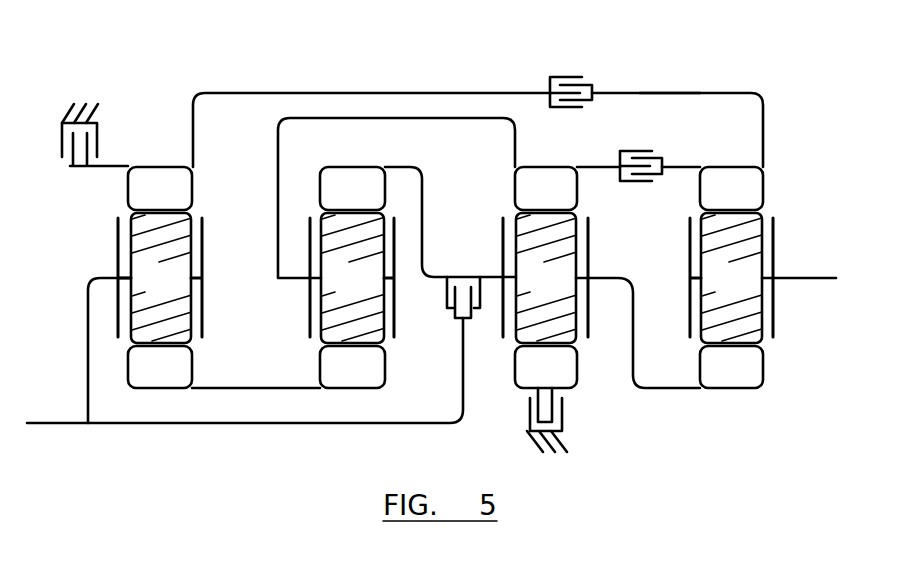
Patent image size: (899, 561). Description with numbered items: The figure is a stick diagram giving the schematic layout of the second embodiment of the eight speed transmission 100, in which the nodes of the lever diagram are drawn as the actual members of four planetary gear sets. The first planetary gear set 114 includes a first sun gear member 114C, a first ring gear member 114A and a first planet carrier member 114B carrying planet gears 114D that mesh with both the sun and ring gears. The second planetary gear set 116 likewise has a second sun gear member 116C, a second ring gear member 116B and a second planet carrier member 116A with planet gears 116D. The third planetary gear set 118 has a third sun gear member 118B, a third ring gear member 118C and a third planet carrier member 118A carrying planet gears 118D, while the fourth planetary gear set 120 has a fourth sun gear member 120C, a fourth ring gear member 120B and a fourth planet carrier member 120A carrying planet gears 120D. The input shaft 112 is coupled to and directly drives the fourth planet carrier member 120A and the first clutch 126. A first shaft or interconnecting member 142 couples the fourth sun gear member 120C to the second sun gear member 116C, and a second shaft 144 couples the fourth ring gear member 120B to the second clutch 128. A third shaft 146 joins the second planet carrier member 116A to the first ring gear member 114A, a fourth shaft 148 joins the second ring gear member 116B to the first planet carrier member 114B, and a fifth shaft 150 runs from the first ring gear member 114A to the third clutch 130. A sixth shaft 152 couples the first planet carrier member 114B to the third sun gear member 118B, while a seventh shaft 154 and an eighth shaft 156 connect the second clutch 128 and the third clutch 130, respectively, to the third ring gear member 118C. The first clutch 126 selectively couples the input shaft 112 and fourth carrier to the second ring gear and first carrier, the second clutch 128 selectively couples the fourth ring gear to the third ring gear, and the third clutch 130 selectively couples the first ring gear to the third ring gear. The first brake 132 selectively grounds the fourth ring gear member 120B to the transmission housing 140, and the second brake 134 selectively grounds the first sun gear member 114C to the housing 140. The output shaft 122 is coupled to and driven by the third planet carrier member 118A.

The eight speed transmission 100 is at (748, 58).
The input shaft 112 is at (63, 425).
The first planetary gear set 114 is at (544, 321).
The first ring gear member 114A is at (524, 203).
The first planet carrier member 114B is at (502, 233).
The first sun gear member 114C is at (524, 382).
The planet gears 114D is at (522, 288).
The second planetary gear set 116 is at (322, 322).
The second planet carrier member 116A is at (309, 307).
The second ring gear member 116B is at (375, 203).
The second sun gear member 116C is at (375, 382).
The planet gears 116D is at (377, 288).
The third planetary gear set 118 is at (726, 321).
The third planet carrier member 118A is at (688, 259).
The third sun gear member 118B is at (754, 382).
The third ring gear member 118C is at (754, 203).
The planet gears 118D is at (756, 288).
The fourth planetary gear set 120 is at (177, 323).
The fourth planet carrier member 120A is at (205, 271).
The fourth ring gear member 120B is at (137, 203).
The fourth sun gear member 120C is at (137, 382).
The planet gears 120D is at (137, 288).
The output shaft 122 is at (810, 281).
The first clutch 126 is at (447, 297).
The second clutch 128 is at (568, 77).
The third clutch 130 is at (640, 151).
The first brake 132 is at (62, 144).
The second brake 134 is at (528, 412).
The transmission housing 140 is at (100, 107).
The first shaft or interconnecting member 142 is at (216, 387).
The second shaft or interconnecting member 144 is at (285, 93).
The third shaft or interconnecting member 146 is at (420, 118).
The fourth shaft or interconnecting member 148 is at (423, 237).
The fifth shaft or interconnecting member 150 is at (587, 166).
The sixth shaft or interconnecting member 152 is at (651, 329).
The seventh shaft or interconnecting member 154 is at (648, 93).
The eighth shaft or interconnecting member 156 is at (682, 166).